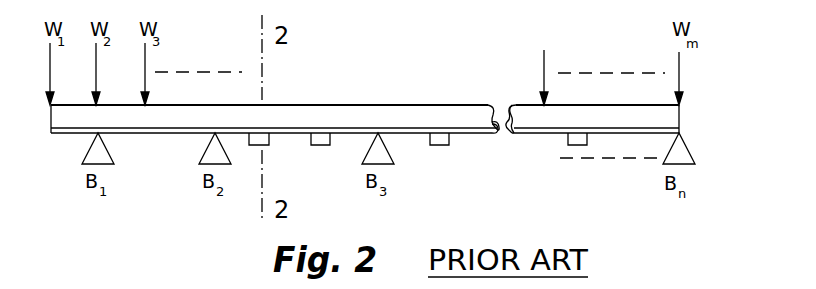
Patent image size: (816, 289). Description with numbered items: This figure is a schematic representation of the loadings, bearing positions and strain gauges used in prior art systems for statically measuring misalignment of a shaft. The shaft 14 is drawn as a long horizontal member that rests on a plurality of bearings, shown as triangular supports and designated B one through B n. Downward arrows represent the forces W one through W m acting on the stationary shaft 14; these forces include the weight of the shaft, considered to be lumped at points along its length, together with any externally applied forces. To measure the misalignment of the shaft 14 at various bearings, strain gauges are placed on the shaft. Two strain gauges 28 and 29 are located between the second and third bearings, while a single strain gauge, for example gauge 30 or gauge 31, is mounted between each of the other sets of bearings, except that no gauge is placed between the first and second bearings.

The shaft 14 is at (374, 108).
The strain gauge 28 is at (268, 145).
The strain gauge 29 is at (322, 145).
The strain gauge 30 is at (441, 145).
The strain gauge 31 is at (578, 145).